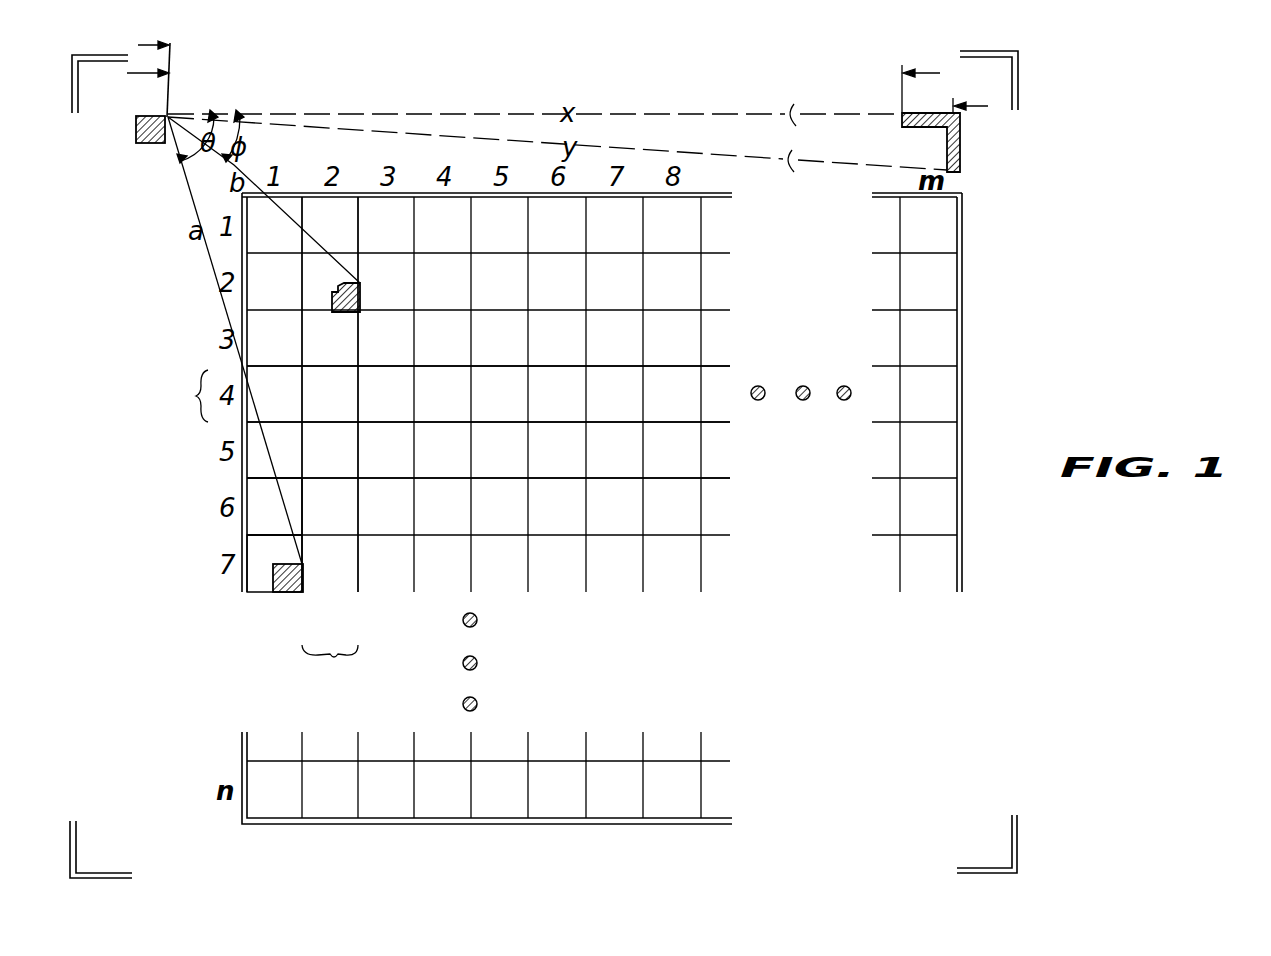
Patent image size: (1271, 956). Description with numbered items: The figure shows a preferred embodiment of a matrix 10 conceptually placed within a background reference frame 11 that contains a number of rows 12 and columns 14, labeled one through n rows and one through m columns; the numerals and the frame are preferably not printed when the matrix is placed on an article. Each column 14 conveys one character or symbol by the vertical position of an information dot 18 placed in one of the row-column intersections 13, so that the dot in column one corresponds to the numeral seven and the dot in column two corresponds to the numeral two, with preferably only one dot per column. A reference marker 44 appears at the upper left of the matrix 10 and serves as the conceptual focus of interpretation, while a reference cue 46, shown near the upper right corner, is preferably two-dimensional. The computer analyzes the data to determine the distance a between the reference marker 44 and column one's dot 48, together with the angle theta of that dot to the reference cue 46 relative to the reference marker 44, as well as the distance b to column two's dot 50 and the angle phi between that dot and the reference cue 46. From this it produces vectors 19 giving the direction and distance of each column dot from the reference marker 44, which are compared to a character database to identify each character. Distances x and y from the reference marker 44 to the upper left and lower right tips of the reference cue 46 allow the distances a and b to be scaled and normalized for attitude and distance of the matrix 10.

The matrix 10 is at (208, 326).
The frame 11 is at (243, 468).
The row 12 is at (450, 394).
The intersection 13 is at (265, 522).
The column 14 is at (330, 445).
The information dot 18 is at (290, 594).
The vector 19 is at (190, 193).
The reference marker 44 is at (136, 130).
The reference cue 46 is at (930, 113).
The column one's dot 48 is at (304, 580).
The column two's dot 50 is at (360, 293).